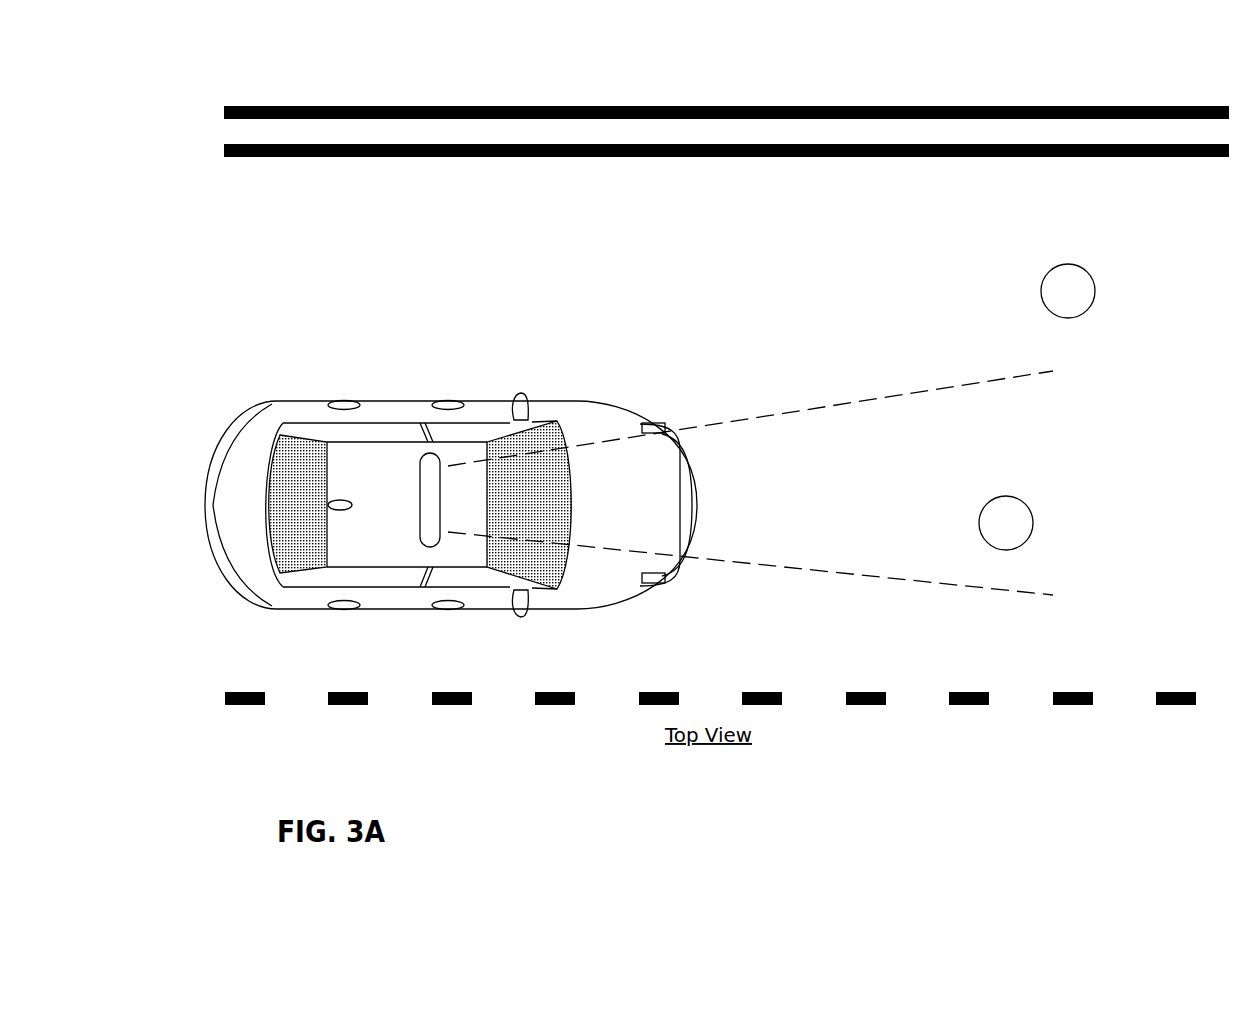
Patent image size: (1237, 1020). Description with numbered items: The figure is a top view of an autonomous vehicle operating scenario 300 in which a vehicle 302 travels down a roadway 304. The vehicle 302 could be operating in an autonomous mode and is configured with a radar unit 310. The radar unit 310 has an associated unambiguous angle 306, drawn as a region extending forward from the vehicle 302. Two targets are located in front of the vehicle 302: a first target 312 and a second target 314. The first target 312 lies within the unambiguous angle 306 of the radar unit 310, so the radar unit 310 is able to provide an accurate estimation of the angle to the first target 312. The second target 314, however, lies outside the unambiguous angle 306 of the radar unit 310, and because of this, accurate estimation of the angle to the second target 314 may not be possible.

The scenario 300 is at (470, 72).
The vehicle 302 is at (613, 402).
The roadway 304 is at (640, 167).
The unambiguous angle 306 is at (817, 406).
The radar unit 310 is at (422, 468).
The first target 312 is at (1016, 497).
The second target 314 is at (1095, 283).